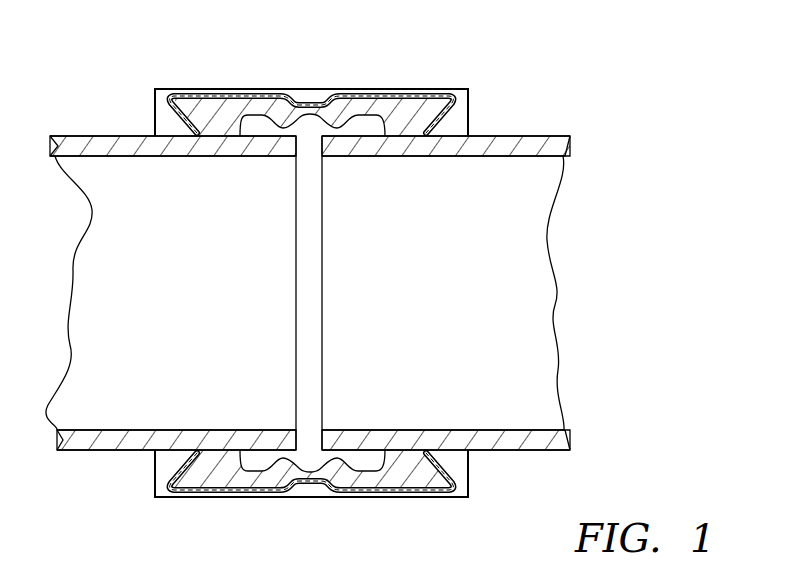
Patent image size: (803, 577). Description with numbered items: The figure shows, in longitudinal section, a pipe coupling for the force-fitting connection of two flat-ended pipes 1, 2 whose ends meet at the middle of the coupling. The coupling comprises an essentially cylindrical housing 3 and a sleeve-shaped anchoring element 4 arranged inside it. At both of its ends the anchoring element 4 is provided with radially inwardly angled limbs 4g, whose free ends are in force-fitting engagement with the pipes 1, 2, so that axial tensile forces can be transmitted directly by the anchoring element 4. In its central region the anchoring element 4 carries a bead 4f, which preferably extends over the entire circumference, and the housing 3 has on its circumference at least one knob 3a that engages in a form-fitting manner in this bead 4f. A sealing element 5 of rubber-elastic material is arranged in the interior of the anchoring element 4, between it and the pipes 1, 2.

The pipe 1 is at (118, 143).
The pipe 2 is at (490, 143).
The housing 3 is at (193, 498).
The knob 3a is at (314, 495).
The anchoring element 4 is at (368, 491).
The bead 4f is at (291, 494).
The limb 4g is at (176, 466).
The sealing element 5 is at (397, 472).